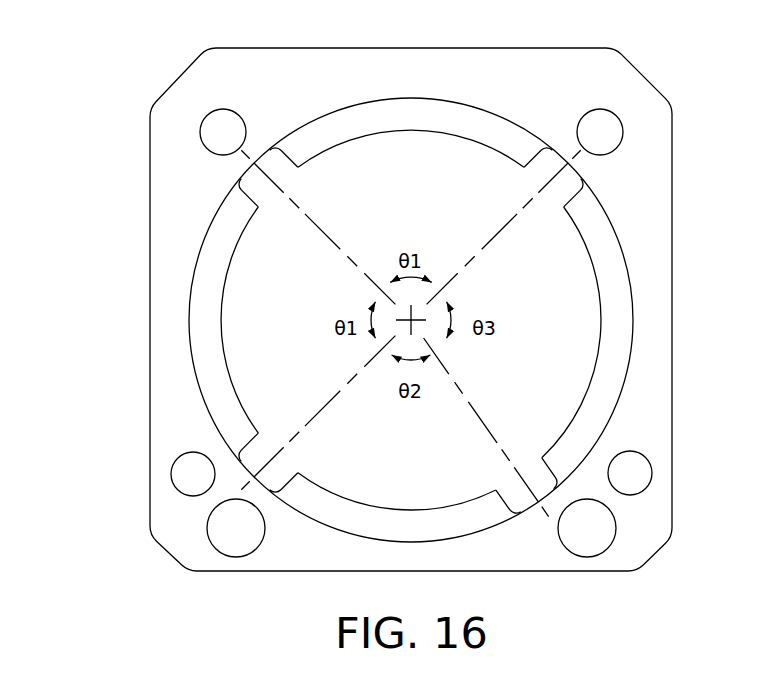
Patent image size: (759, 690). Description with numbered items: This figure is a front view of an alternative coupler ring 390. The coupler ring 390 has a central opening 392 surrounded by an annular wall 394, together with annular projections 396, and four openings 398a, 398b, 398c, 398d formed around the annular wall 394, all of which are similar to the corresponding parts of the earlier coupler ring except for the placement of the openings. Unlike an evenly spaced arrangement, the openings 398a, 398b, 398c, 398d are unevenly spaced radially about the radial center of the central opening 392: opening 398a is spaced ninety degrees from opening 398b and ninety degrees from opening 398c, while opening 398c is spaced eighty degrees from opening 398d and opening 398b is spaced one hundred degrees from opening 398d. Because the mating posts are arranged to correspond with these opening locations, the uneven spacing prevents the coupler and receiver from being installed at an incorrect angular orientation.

The coupler ring 390 is at (127, 48).
The central opening 392 is at (550, 403).
The annular wall 394 is at (224, 200).
The annular projections 396 is at (430, 133).
The opening 398a is at (293, 176).
The opening 398b is at (526, 192).
The opening 398c is at (291, 457).
The opening 398d is at (495, 477).